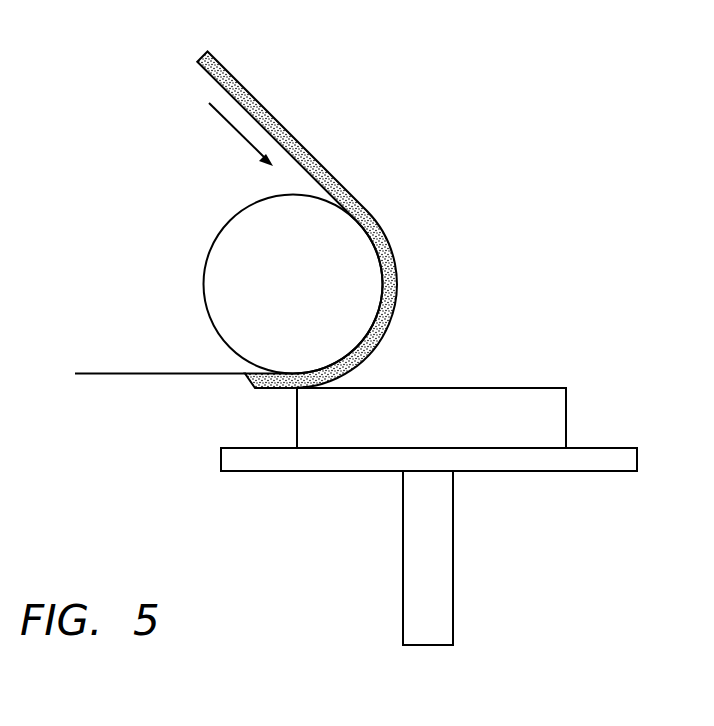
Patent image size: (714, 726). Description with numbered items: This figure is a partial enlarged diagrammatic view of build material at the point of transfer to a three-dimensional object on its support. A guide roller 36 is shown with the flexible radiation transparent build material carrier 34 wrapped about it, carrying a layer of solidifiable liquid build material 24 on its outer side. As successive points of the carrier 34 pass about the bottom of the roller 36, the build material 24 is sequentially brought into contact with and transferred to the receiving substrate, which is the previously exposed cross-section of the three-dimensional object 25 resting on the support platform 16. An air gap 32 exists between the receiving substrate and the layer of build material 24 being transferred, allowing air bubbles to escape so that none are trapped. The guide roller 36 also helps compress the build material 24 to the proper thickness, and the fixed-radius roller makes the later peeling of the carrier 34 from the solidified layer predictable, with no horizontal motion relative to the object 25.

The support platform 16 is at (525, 473).
The solidifiable liquid build material 24 is at (393, 248).
The three-dimensional object 25 is at (566, 418).
The air gap 32 is at (362, 381).
The radiation transparent build material carrier 34 is at (162, 373).
The guide roller 36 is at (217, 240).